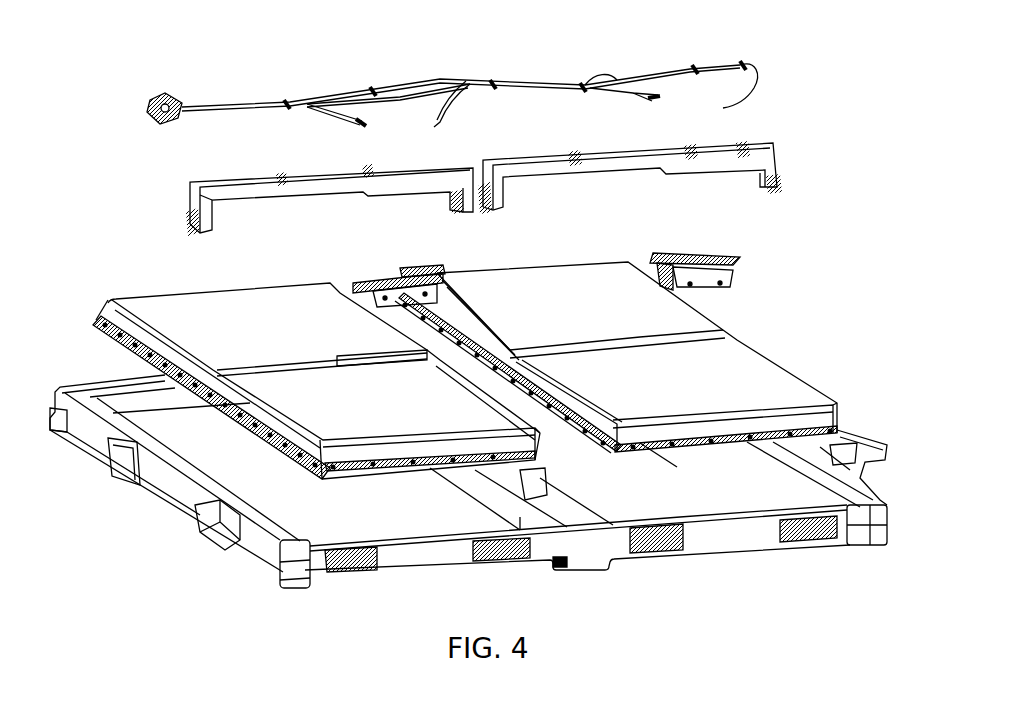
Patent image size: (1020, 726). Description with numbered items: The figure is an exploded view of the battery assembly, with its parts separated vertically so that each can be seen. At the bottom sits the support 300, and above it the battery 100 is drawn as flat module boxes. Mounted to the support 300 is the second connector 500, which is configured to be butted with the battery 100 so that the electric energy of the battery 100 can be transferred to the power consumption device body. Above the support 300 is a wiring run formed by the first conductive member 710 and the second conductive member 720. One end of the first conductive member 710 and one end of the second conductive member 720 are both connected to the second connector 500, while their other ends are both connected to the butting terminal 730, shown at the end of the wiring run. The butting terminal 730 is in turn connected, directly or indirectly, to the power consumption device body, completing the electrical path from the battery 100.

The battery 100 is at (180, 310).
The support 300 is at (162, 202).
The second connector 500 is at (393, 288).
The first conductive member 710 is at (330, 110).
The second conductive member 720 is at (440, 121).
The butting terminal 730 is at (158, 98).